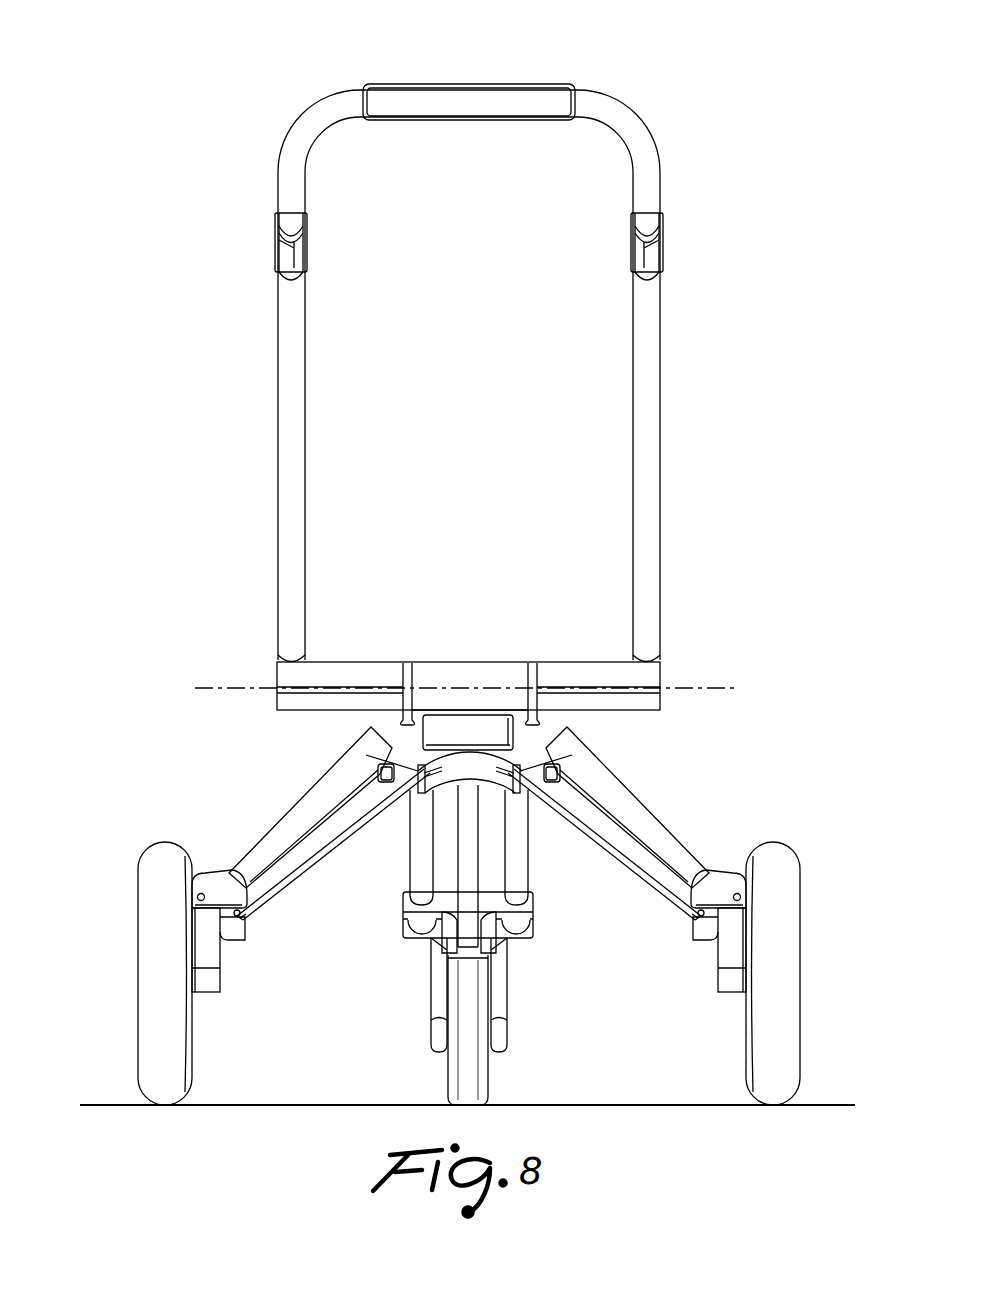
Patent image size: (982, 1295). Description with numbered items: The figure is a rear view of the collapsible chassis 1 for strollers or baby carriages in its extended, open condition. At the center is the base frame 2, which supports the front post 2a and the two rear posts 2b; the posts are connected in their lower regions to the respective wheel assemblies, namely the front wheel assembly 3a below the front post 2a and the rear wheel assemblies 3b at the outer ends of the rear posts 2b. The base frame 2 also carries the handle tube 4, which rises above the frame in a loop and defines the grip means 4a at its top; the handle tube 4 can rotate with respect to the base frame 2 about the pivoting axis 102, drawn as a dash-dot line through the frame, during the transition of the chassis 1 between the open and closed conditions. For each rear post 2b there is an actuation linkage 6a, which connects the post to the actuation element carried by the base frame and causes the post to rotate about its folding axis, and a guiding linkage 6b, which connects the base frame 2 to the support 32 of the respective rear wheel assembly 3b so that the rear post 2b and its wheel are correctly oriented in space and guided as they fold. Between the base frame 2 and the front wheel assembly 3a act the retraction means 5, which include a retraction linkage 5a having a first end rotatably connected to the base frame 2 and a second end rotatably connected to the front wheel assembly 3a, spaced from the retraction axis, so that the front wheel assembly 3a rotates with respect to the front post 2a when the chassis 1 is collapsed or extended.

The collapsible chassis 1 is at (765, 526).
The base frame 2 is at (545, 738).
The front post 2a is at (517, 852).
The rear post 2b is at (308, 822).
The front wheel assembly 3a is at (467, 1072).
The rear wheel assembly 3b is at (168, 965).
The support 32 is at (207, 940).
The handle tube 4 is at (291, 354).
The grip means 4a is at (445, 82).
The retraction means 5 is at (457, 882).
The retraction linkage 5a is at (470, 860).
The actuation linkage 6a is at (400, 770).
The guiding linkage 6b is at (299, 868).
The pivoting axis 102 is at (240, 688).